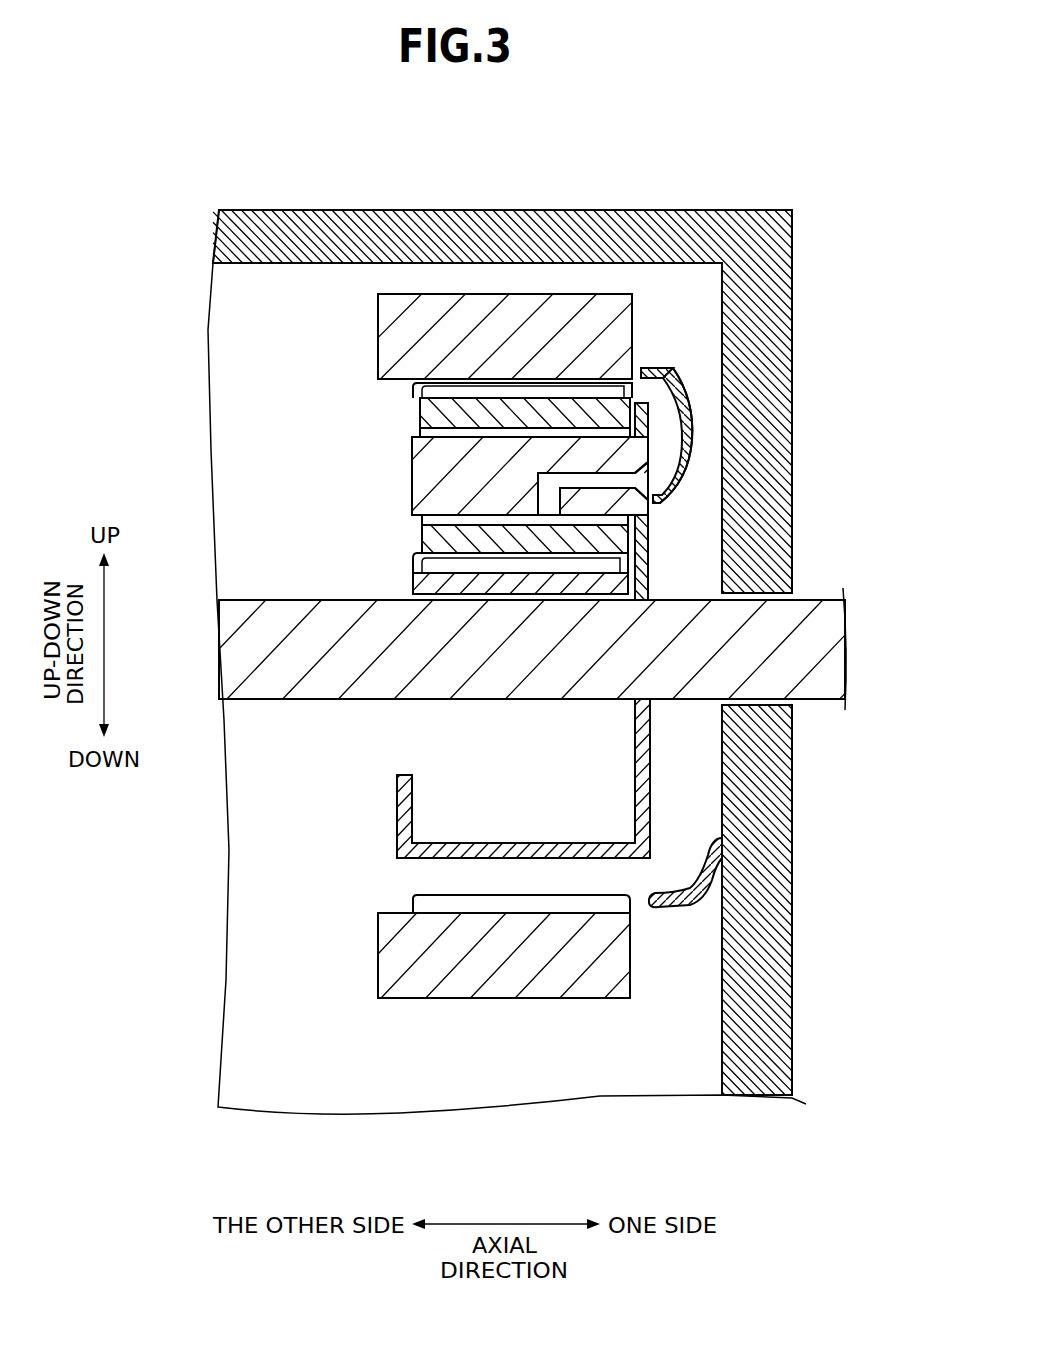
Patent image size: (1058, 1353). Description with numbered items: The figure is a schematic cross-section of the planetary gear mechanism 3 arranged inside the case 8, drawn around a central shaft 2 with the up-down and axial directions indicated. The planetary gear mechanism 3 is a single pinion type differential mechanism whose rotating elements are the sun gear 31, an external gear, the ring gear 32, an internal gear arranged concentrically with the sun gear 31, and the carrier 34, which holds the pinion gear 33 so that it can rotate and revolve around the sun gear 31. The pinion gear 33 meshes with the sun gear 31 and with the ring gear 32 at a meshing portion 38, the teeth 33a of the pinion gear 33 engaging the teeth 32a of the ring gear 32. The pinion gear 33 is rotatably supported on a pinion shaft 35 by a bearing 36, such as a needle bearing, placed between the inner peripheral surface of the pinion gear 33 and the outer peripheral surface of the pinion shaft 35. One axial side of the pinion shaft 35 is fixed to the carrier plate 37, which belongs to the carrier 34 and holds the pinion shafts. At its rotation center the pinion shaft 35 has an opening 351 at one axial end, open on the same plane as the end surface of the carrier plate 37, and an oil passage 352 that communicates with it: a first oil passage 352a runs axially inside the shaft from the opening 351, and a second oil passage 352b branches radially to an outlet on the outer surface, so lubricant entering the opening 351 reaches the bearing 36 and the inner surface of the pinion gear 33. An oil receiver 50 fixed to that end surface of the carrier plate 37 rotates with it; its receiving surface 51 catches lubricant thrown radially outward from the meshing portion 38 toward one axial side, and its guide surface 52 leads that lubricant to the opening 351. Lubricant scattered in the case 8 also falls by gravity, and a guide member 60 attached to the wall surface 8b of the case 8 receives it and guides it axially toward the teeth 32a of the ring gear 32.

The shaft 2 is at (820, 650).
The planetary gear mechanism 3 is at (652, 308).
The case 8 is at (276, 210).
The wall surface 8b is at (721, 774).
The sun gear 31 is at (413, 584).
The ring gear 32 is at (378, 330).
The teeth 32a is at (427, 902).
The pinion gear 33 is at (420, 410).
The teeth 33a is at (457, 393).
The carrier 34 is at (663, 583).
The pinion shaft 35 is at (432, 477).
The bearing 36 is at (412, 437).
The carrier plate 37 is at (650, 541).
The meshing portion 38 is at (393, 387).
The oil receiver 50 is at (661, 389).
The receiving surface 51 is at (696, 381).
The guide surface 52 is at (682, 422).
The opening 351 is at (650, 467).
The oil passage 352 is at (585, 150).
The first oil passage 352a is at (577, 482).
The second oil passage 352b is at (548, 496).
The guide member 60 is at (705, 905).